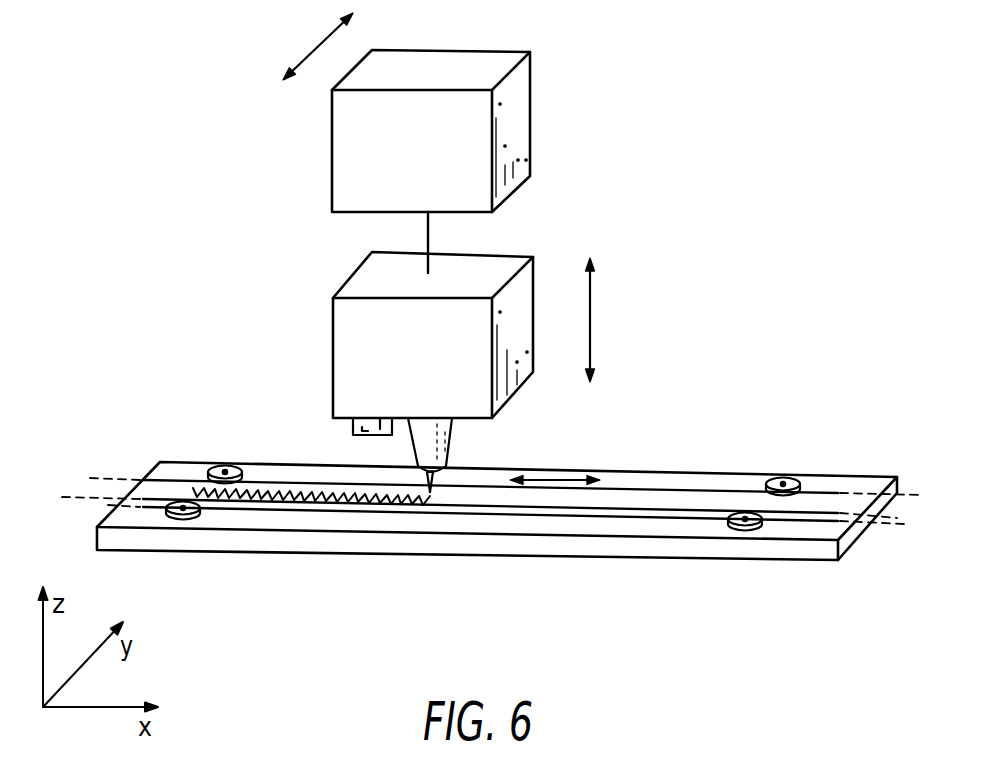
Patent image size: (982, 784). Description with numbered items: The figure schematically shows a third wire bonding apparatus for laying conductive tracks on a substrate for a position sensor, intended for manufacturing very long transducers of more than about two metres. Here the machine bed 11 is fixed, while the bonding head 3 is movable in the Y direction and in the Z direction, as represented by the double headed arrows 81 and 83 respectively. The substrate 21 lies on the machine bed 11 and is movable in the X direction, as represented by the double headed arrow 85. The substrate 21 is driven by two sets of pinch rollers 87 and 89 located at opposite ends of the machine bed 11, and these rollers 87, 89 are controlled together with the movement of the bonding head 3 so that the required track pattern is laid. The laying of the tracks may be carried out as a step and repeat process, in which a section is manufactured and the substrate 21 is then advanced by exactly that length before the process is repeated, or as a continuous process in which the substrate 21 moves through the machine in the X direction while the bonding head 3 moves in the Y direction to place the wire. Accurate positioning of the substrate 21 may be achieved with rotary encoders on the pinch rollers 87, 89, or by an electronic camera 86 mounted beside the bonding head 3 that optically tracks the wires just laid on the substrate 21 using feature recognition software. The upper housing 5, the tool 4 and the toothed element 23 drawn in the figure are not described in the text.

The double headed arrow 81 is at (305, 55).
The upper drive unit / housing 5 is at (513, 128).
The bonding head 3 is at (523, 295).
The double headed arrow 83 is at (593, 323).
The electronic camera 86 is at (352, 426).
The tool / pin 4 is at (450, 452).
The machine bed 11 is at (822, 483).
The substrate 21 is at (653, 498).
The toothed rack 23 is at (247, 563).
The pinch rollers 87 is at (200, 512).
The pinch rollers 89 is at (793, 490).
The double headed arrow 85 is at (553, 475).